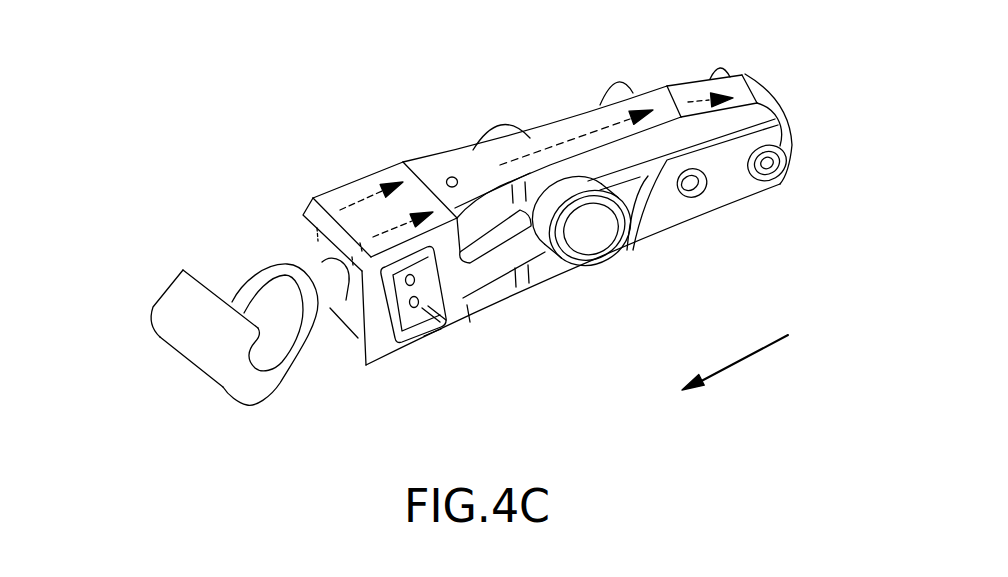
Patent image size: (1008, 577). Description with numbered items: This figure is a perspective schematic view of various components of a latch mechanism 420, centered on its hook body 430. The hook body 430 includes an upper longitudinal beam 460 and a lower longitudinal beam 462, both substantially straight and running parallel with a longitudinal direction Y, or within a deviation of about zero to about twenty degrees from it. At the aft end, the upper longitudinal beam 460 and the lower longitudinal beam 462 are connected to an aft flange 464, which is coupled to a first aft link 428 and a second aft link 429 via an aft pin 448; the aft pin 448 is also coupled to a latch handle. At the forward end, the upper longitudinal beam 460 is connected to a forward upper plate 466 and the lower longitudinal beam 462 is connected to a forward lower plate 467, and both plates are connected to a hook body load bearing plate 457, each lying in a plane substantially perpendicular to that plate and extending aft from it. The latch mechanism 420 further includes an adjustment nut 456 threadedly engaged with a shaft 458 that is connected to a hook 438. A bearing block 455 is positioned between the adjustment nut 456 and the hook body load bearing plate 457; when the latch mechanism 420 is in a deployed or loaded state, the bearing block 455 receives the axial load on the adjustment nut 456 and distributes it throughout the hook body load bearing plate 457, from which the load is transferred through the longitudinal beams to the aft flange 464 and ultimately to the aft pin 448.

The latch mechanism 420 is at (286, 131).
The first aft link 428 is at (690, 212).
The second aft link 429 is at (719, 68).
The hook body 430 is at (494, 300).
The hook 438 is at (176, 300).
The aft pin 448 is at (768, 166).
The bearing block 455 is at (396, 342).
The adjustment nut 456 is at (421, 288).
The hook body load bearing plate 457 is at (372, 337).
The shaft 458 is at (325, 267).
The upper longitudinal beam 460 is at (538, 142).
The lower longitudinal beam 462 is at (552, 266).
The aft flange 464 is at (752, 90).
The forward upper plate 466 is at (351, 197).
The forward lower plate 467 is at (430, 342).
The longitudinal direction Y is at (744, 357).